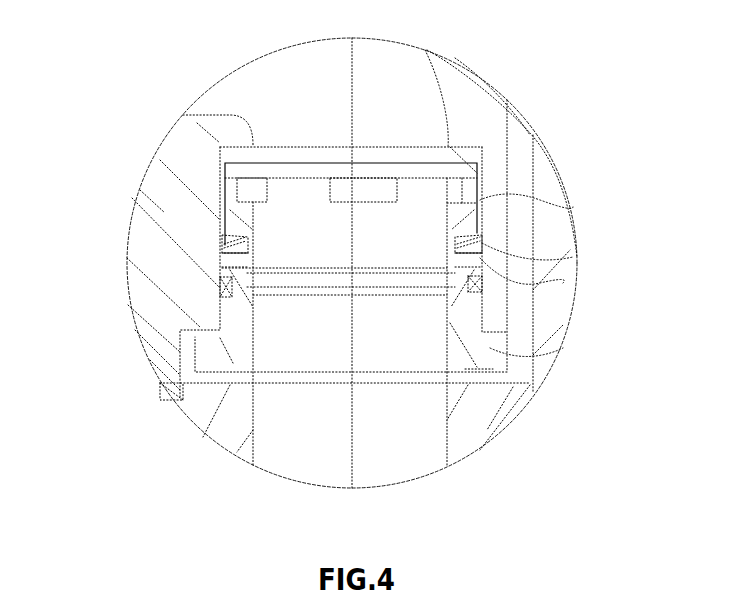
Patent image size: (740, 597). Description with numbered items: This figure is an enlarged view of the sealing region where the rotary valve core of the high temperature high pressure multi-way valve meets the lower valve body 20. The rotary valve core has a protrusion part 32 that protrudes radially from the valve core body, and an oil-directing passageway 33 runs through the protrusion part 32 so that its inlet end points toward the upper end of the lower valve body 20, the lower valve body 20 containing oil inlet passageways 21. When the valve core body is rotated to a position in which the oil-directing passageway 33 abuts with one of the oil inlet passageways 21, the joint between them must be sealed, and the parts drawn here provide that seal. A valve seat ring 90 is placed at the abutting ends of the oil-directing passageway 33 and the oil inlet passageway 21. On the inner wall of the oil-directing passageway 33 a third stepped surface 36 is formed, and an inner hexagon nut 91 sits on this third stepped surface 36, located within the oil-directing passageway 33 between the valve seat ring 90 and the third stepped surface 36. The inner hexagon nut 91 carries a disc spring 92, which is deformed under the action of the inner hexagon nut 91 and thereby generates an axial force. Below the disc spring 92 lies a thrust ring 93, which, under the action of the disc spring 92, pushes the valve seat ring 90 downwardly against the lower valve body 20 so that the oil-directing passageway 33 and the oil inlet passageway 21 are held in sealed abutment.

The lower valve body 20 is at (490, 405).
The oil inlet passageways 21 is at (420, 432).
The protrusion part 32 is at (143, 173).
The oil-directing passageway 33 is at (287, 83).
The third stepped surface 36 is at (530, 157).
The valve seat ring 90 is at (563, 348).
The inner hexagon nut 91 is at (553, 204).
The disc spring 92 is at (573, 257).
The thrust ring 93 is at (563, 283).